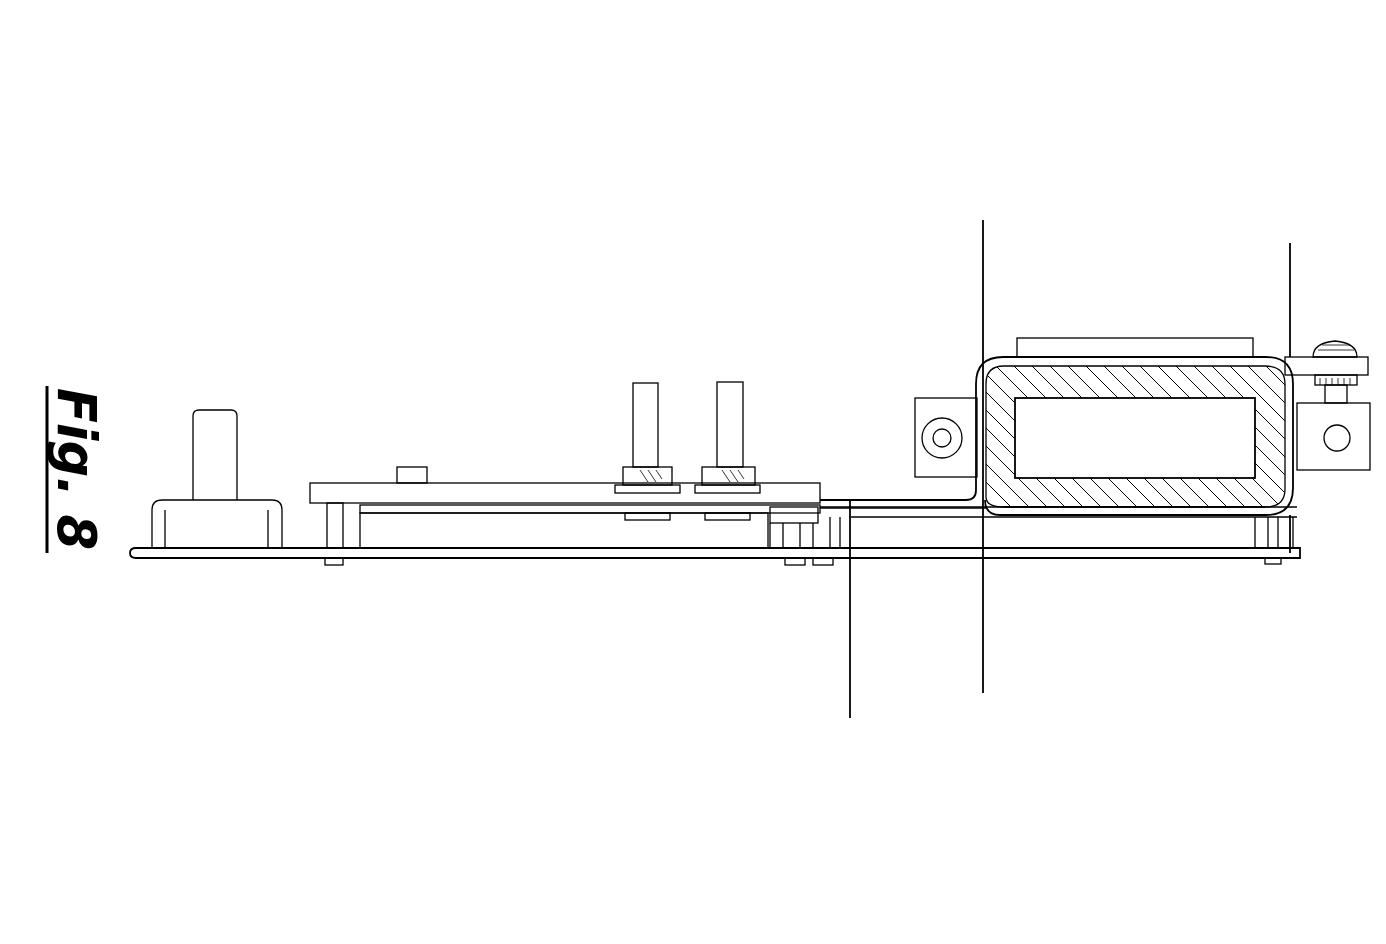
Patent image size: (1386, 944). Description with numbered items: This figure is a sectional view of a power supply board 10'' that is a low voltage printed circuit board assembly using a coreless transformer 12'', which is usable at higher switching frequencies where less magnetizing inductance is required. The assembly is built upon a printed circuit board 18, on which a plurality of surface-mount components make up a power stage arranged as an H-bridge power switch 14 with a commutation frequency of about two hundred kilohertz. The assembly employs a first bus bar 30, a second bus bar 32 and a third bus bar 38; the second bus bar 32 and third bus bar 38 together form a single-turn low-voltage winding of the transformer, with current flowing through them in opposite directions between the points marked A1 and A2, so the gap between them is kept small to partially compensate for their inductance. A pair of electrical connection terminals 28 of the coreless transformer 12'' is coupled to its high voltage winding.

The power supply board 10'' is at (758, 385).
The coreless transformer 12'' is at (1128, 370).
The H-bridge power switch 14 is at (535, 481).
The printed circuit board 18 is at (402, 555).
The electrical connection terminals 28 is at (1357, 452).
The first bus bar 30 is at (515, 505).
The second bus bar 32 is at (1218, 515).
The third bus bar 38 is at (910, 500).